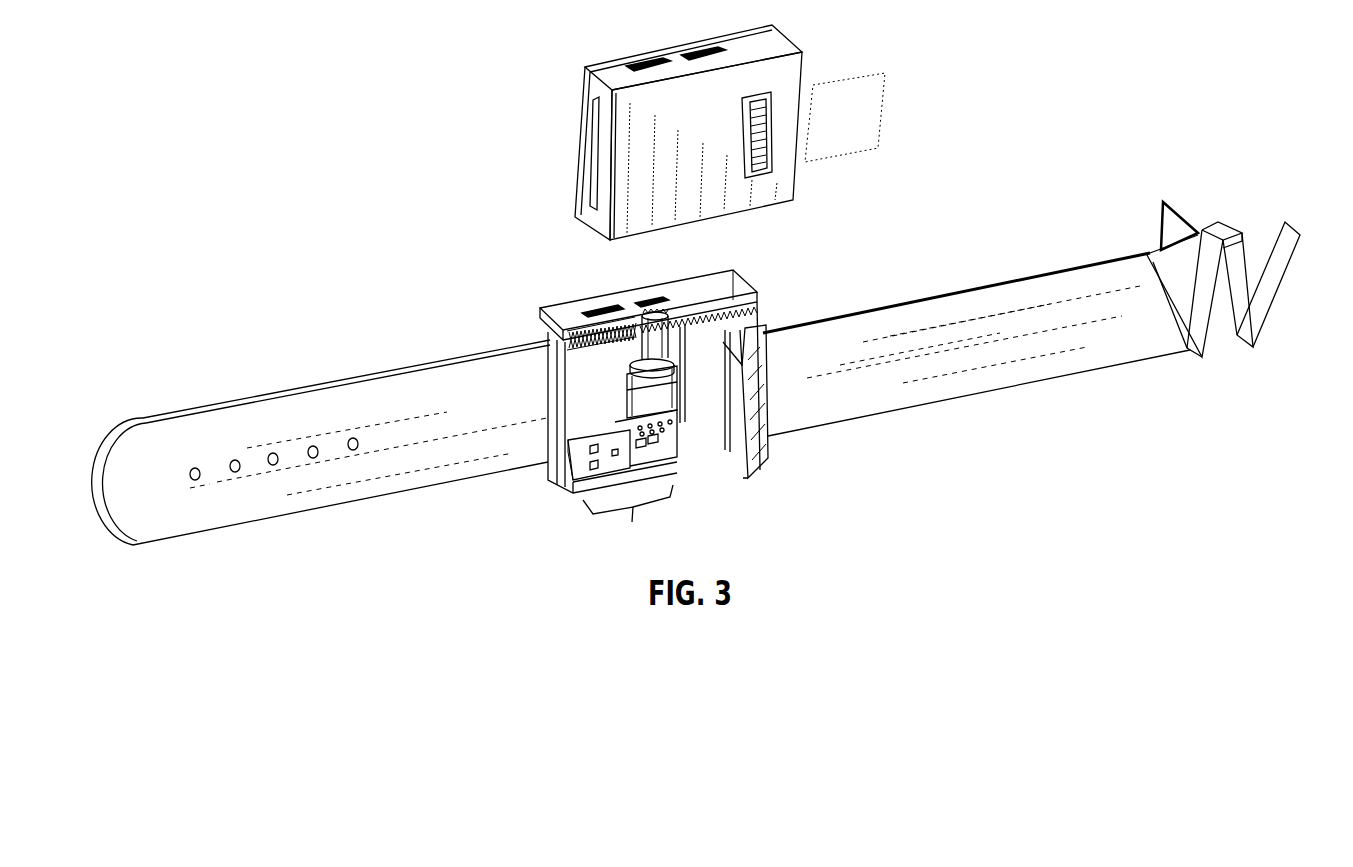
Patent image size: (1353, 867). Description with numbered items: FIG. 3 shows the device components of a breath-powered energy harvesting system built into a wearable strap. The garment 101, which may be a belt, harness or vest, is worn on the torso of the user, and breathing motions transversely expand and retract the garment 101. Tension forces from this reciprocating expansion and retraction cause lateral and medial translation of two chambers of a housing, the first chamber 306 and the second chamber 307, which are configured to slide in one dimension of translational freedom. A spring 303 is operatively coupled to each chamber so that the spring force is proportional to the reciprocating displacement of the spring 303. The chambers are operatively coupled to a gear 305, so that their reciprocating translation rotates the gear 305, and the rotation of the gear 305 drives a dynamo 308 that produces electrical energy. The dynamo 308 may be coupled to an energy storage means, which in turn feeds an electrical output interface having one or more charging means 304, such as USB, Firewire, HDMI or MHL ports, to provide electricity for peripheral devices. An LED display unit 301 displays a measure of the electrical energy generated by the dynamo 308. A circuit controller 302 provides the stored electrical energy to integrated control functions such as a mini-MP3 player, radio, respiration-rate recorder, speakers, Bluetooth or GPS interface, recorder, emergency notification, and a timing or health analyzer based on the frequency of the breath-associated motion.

The garment 101 is at (1100, 345).
The LED display unit 301 is at (780, 132).
The circuit controller 302 is at (633, 521).
The spring 303 is at (565, 339).
The charging means 304 is at (590, 303).
The gear 305 is at (636, 352).
The first chamber 306 is at (716, 282).
The second chamber 307 is at (700, 448).
The dynamo 308 is at (660, 397).